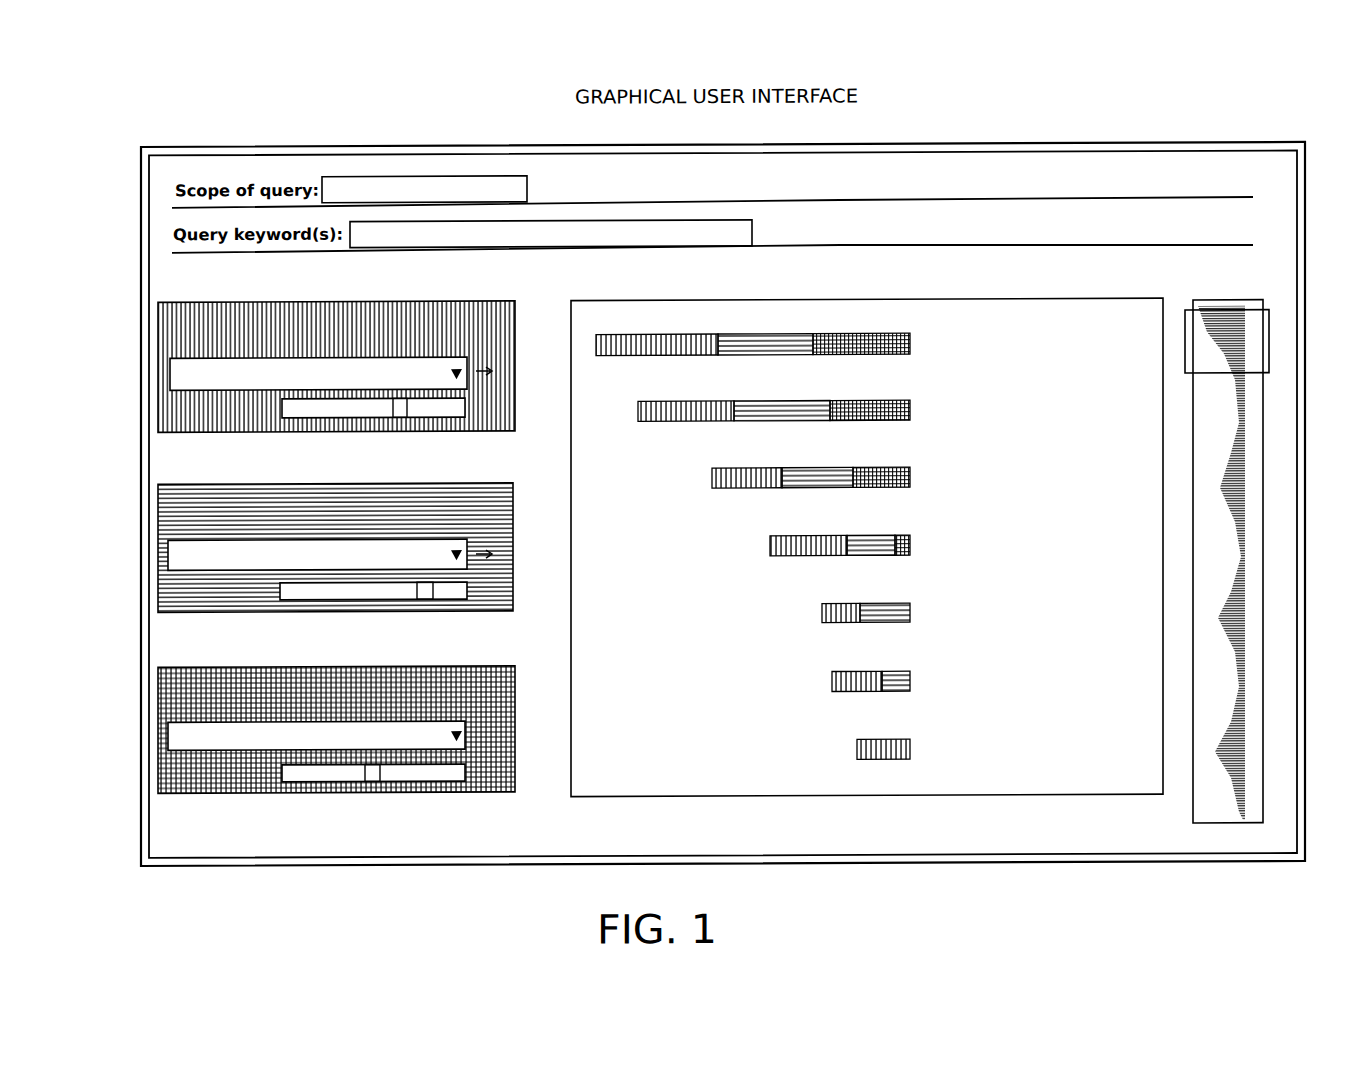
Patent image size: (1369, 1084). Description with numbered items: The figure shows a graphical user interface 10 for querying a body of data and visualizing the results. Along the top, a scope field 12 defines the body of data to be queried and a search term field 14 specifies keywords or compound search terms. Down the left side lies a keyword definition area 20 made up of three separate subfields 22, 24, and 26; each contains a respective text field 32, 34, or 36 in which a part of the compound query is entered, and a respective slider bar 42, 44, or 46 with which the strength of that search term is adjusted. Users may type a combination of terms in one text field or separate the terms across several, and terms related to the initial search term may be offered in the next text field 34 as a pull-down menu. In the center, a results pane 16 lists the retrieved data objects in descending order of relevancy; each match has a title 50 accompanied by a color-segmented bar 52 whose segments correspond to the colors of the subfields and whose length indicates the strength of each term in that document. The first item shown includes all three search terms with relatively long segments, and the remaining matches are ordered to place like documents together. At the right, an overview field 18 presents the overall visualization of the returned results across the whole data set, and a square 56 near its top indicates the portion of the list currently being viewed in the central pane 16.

The user interface 10 is at (1036, 111).
The scope field 12 is at (478, 176).
The search term field 14 is at (680, 220).
The results pane 16 is at (632, 299).
The overview field 18 is at (1252, 492).
The keyword definition area 20 is at (100, 805).
The first subfield 22 is at (306, 369).
The second subfield 24 is at (305, 548).
The third subfield 26 is at (307, 728).
The first text field 32 is at (160, 369).
The second text field 34 is at (163, 557).
The third text field 36 is at (163, 735).
The first slider bar 42 is at (352, 421).
The second slider bar 44 is at (355, 598).
The third slider bar 46 is at (402, 782).
The title 50 is at (1020, 329).
The color-segmented bar 52 is at (767, 333).
The square 56 is at (1270, 333).